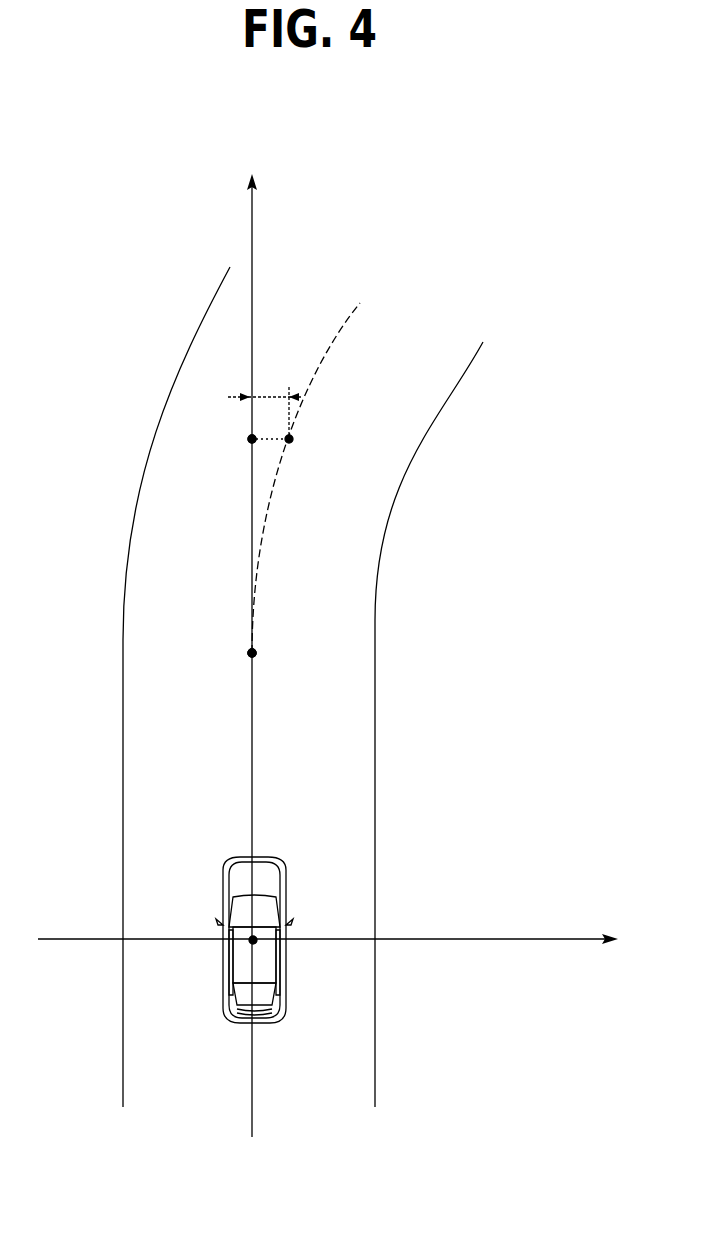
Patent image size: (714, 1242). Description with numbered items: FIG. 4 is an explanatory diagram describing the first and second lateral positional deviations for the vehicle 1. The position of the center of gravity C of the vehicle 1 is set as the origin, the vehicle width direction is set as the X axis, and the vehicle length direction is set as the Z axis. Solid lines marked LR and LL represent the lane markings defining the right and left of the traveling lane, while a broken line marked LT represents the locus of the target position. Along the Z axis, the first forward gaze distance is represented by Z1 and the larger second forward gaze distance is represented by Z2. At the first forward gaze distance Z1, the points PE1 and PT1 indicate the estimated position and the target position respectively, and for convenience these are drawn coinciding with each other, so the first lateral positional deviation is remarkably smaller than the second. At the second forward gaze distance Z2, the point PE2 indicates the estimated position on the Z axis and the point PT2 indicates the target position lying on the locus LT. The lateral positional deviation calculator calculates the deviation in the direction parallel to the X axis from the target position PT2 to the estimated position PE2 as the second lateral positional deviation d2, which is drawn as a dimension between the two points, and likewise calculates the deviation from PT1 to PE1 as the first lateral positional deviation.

The Z axis Z is at (239, 655).
The X axis X is at (328, 954).
The lane marking LR is at (121, 855).
The lane marking LL is at (377, 855).
The locus of the target position LT is at (343, 328).
The second lateral positional deviation d2 is at (265, 402).
The second forward gaze distance Z2 is at (251, 440).
The estimated position PE2 is at (248, 444).
The target position PT2 is at (293, 439).
The first forward gaze distance Z1 is at (237, 654).
The estimated position PE1 is at (250, 658).
The target position PT1 is at (252, 653).
The vehicle 1 is at (262, 1023).
The center of gravity C is at (258, 943).